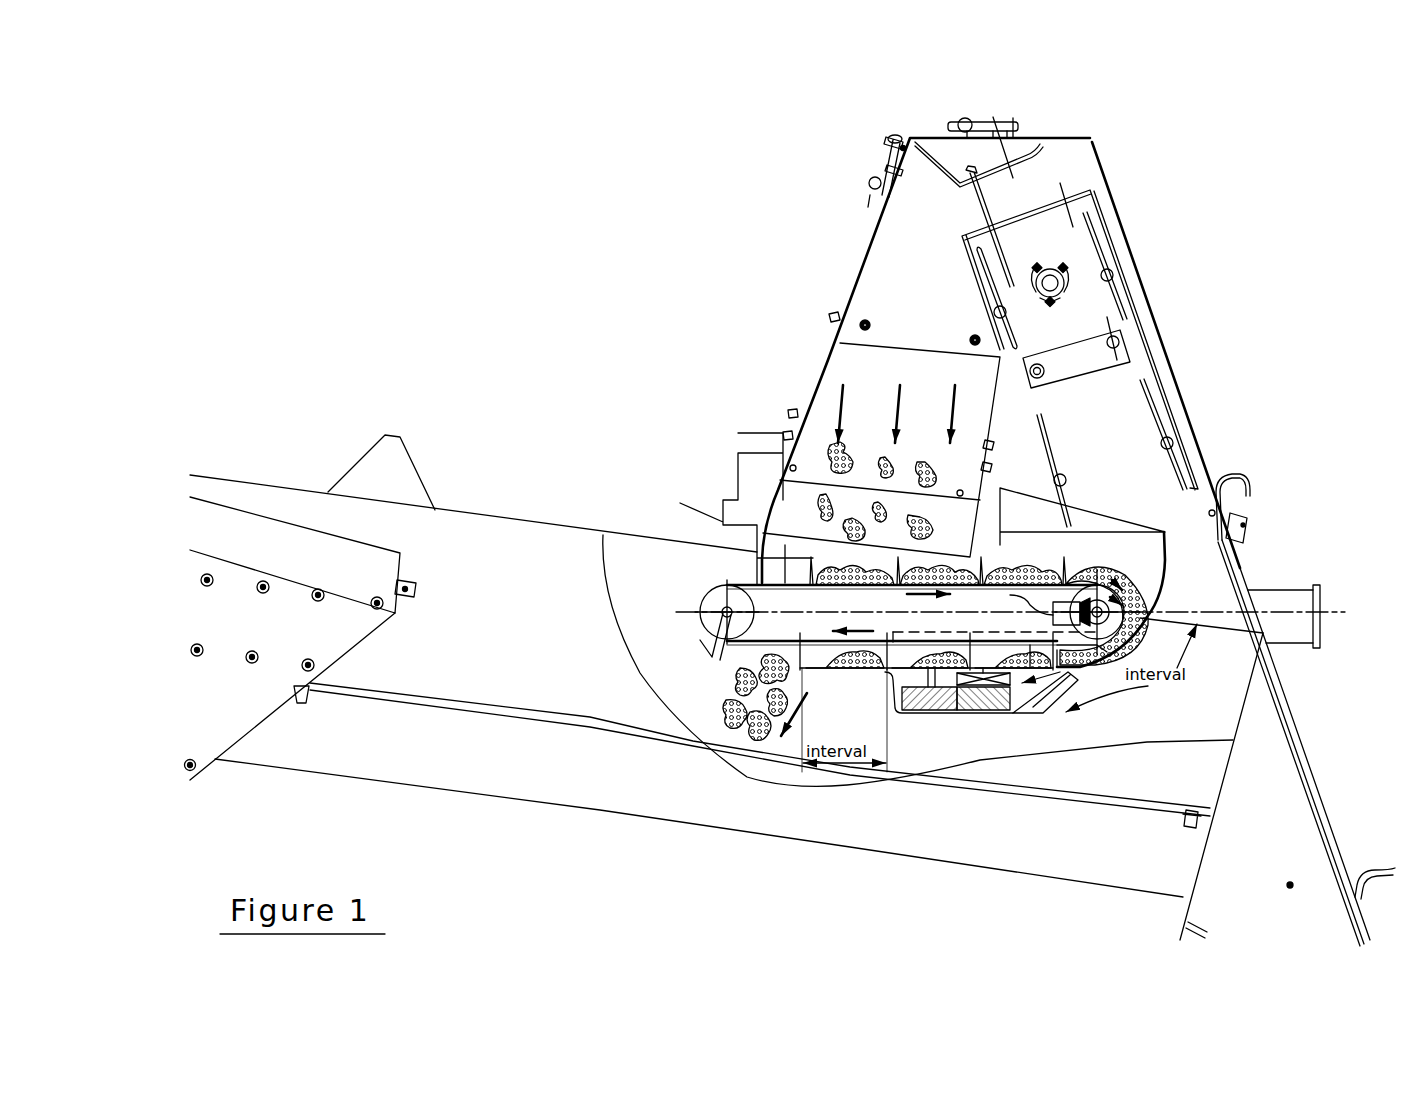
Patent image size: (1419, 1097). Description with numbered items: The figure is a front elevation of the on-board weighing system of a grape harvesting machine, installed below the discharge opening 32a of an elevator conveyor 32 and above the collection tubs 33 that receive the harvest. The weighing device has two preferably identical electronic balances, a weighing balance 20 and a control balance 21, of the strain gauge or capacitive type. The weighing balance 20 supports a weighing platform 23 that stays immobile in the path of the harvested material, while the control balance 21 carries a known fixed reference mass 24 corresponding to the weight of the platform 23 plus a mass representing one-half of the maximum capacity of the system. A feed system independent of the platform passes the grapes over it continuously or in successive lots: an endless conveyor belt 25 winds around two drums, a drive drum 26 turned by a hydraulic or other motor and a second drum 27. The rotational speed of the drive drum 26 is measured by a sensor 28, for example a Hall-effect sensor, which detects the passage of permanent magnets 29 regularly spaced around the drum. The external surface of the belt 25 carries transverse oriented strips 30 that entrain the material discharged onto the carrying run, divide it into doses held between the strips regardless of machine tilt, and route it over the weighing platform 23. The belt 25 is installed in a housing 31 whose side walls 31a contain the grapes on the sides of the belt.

The electronic balance 20 is at (916, 712).
The control balance 21 is at (1000, 716).
The weighing platform 23 is at (848, 672).
The fixed reference mass 24 is at (1050, 703).
The endless conveyor belt 25 is at (740, 580).
The drive drum 26 is at (1158, 540).
The drum 27 is at (743, 640).
The sensor 28 is at (1143, 592).
The permanent magnets 29 is at (1160, 602).
The transverse oriented strips 30 is at (703, 670).
The housing 31 is at (1165, 598).
The side walls 31a is at (778, 568).
The elevator conveyor 32 is at (913, 232).
The discharge opening 32a is at (877, 341).
The collection tubs 33 is at (527, 520).